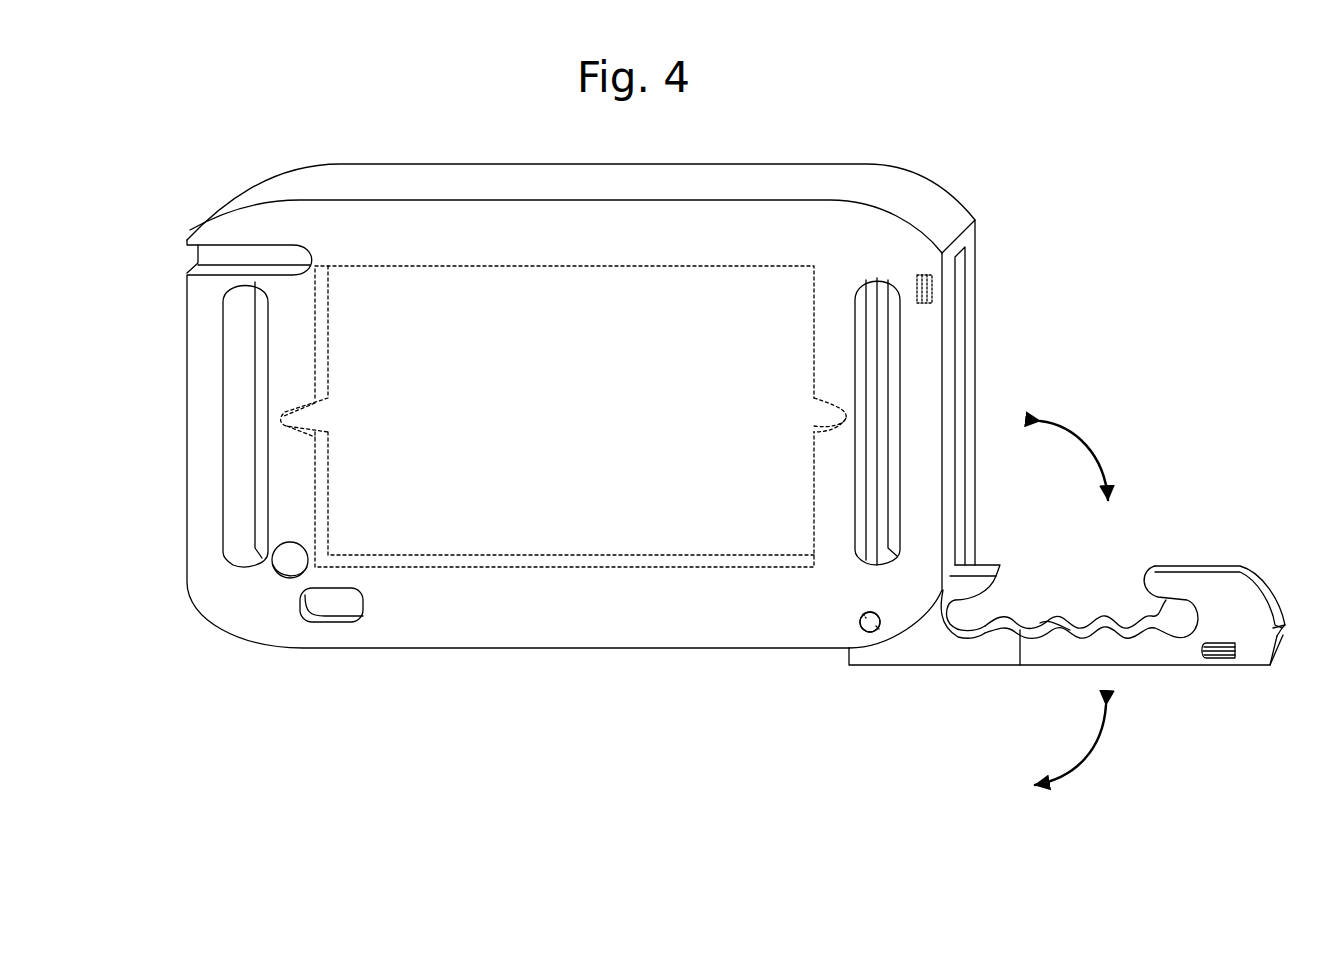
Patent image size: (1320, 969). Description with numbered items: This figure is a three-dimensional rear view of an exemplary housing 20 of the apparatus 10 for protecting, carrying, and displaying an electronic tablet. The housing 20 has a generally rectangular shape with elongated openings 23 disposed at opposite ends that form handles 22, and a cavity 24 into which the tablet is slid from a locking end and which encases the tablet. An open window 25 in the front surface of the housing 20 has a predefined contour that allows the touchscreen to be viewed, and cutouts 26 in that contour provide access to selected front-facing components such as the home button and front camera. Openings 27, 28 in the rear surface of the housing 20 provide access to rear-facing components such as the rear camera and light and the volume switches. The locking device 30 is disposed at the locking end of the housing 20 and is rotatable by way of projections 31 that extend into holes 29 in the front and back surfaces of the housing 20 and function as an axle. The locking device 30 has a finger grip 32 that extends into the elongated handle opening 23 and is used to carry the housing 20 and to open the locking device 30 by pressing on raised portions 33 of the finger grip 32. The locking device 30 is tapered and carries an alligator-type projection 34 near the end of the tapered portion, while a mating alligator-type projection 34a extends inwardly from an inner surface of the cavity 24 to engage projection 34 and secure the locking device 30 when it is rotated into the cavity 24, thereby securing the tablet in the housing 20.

The apparatus 10 is at (1268, 360).
The housing 20 is at (187, 546).
The handles 22 is at (248, 152).
The elongated openings 23 is at (240, 438).
The cavity 24 is at (548, 266).
The open window 25 is at (962, 312).
The cutouts 26 is at (340, 408).
The opening 27 is at (280, 580).
The opening 28 is at (363, 612).
The holes 29 is at (850, 624).
The locking device 30 is at (1207, 565).
The projections 31 is at (865, 612).
The finger grip 32 is at (1128, 625).
The raised portions 33 is at (1052, 620).
The alligator-type projection 34 is at (1220, 643).
The mating alligator-type projection 34a is at (917, 275).